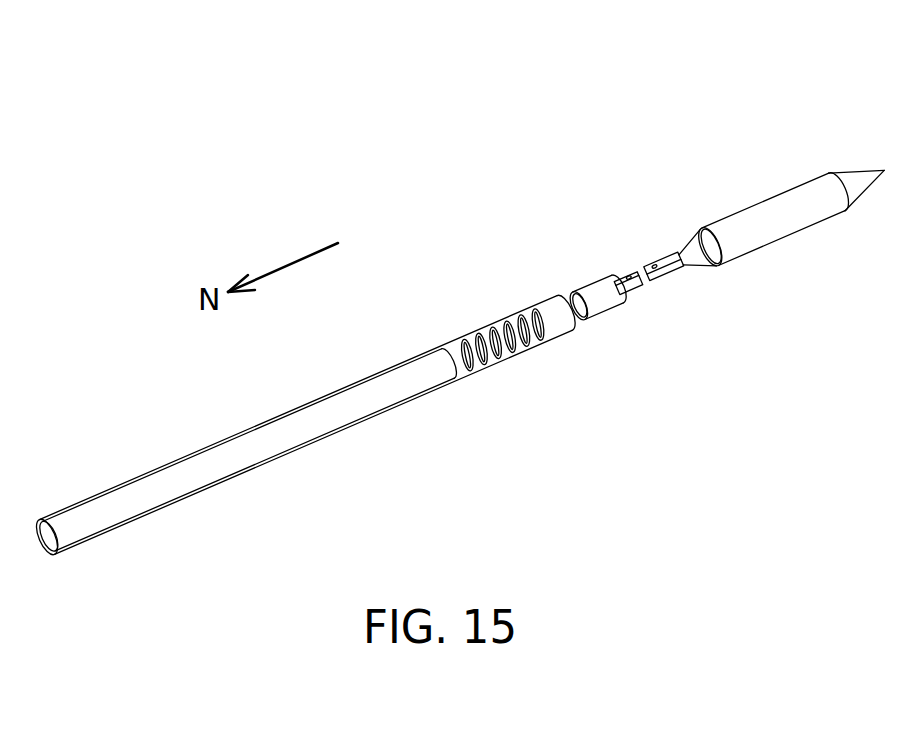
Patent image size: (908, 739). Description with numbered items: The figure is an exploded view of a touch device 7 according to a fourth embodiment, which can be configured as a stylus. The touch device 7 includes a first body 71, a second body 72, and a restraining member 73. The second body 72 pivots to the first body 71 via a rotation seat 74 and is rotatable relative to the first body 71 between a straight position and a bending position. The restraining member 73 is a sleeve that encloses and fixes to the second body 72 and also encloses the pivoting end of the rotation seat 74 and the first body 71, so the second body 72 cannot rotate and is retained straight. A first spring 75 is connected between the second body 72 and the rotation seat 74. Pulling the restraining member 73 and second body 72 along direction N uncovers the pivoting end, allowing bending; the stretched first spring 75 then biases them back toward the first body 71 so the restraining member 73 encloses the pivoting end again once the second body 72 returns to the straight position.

The touch device 7 is at (341, 112).
The first body 71 is at (783, 212).
The second body 72 is at (158, 485).
The restraining member 73 is at (449, 347).
The rotation seat 74 is at (598, 292).
The first spring 75 is at (512, 352).